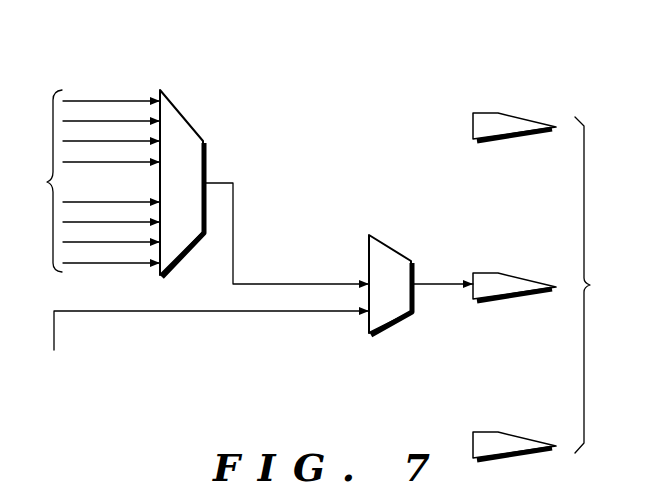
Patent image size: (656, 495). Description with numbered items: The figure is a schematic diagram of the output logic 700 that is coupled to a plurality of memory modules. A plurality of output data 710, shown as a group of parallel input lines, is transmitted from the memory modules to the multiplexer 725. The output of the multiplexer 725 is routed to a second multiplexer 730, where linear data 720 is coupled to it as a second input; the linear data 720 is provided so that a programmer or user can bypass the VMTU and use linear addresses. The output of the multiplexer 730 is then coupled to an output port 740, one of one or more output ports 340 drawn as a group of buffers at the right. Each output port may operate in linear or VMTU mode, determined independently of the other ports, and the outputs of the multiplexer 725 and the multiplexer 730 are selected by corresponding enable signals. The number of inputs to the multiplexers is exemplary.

The output logic 700 is at (121, 39).
The plurality of output data 710 is at (89, 181).
The linear data 720 is at (204, 347).
The multiplexer 725 is at (180, 133).
The multiplexer 730 is at (395, 323).
The output port 740 is at (492, 300).
The output buffers 340 is at (552, 286).